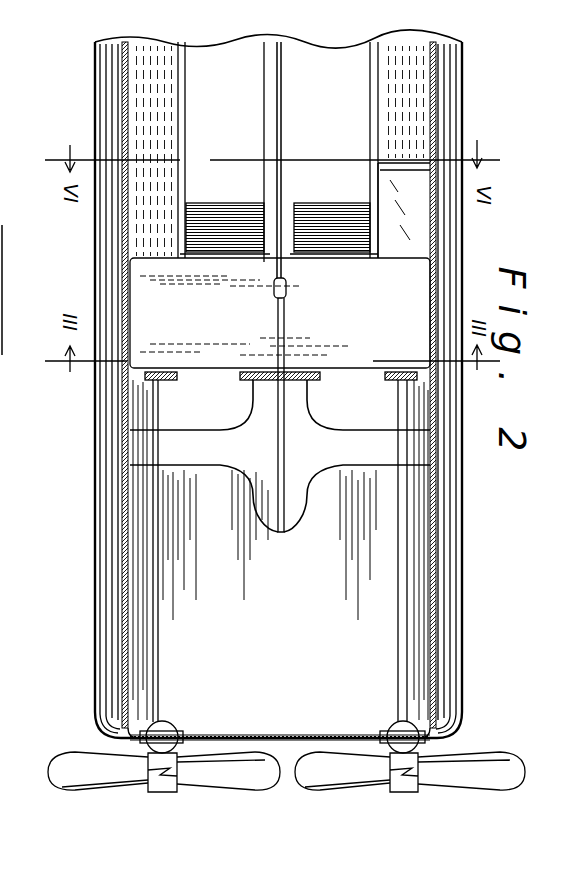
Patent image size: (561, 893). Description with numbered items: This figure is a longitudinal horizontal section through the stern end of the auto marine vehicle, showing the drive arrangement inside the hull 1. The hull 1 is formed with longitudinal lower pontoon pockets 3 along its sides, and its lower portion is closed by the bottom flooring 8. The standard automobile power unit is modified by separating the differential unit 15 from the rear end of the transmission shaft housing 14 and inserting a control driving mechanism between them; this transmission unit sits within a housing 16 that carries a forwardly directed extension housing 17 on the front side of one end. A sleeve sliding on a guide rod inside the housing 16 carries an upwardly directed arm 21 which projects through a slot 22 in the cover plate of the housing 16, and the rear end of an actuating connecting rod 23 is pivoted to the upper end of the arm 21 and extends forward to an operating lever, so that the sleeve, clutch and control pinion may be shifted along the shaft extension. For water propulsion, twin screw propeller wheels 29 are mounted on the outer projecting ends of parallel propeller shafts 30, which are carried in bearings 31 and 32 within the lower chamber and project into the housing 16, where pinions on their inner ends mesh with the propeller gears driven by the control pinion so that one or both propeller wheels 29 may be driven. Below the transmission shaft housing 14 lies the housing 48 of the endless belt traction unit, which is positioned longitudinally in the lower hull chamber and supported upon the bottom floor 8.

The hull 1 is at (437, 647).
The lower pontoon pockets 3 is at (447, 553).
The bottom flooring 8 is at (280, 383).
The transmission shaft housing 14 is at (284, 96).
The differential unit 15 is at (290, 505).
The transmission unit housing 16 is at (280, 313).
The extension housing 17 is at (390, 182).
The arm 21 is at (285, 292).
The slot 22 is at (278, 327).
The connecting rod 23 is at (272, 130).
The propeller wheels 29 is at (328, 775).
The propeller shafts 30 is at (158, 678).
The bearings 31 is at (180, 733).
The bearings 32 is at (170, 380).
The traction unit housing 48 is at (332, 210).